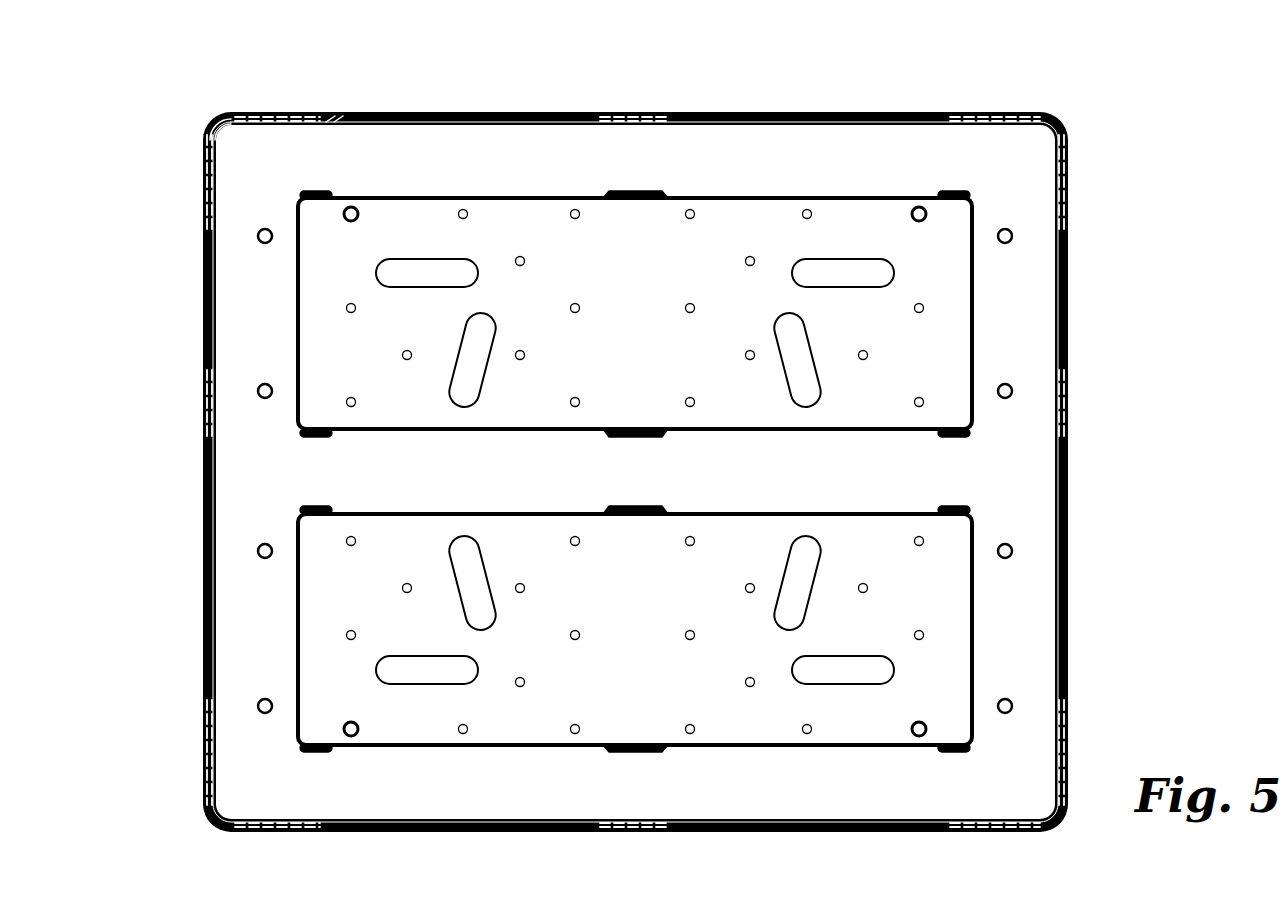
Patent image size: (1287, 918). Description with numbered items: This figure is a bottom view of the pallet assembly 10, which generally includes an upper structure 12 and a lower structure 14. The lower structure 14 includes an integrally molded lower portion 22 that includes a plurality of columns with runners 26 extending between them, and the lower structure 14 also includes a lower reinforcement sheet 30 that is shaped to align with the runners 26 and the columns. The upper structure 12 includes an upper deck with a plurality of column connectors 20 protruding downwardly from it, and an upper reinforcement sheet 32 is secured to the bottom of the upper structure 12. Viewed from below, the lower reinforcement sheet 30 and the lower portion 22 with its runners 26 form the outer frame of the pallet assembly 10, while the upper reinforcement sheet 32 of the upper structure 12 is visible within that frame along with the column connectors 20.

The pallet assembly 10 is at (122, 147).
The upper structure 12 is at (826, 220).
The lower structure 14 is at (203, 300).
The column connectors 20 is at (663, 115).
The lower portion 22 is at (203, 135).
The runners 26 is at (471, 112).
The lower reinforcement sheet 30 is at (317, 128).
The upper reinforcement sheet 32 is at (530, 220).